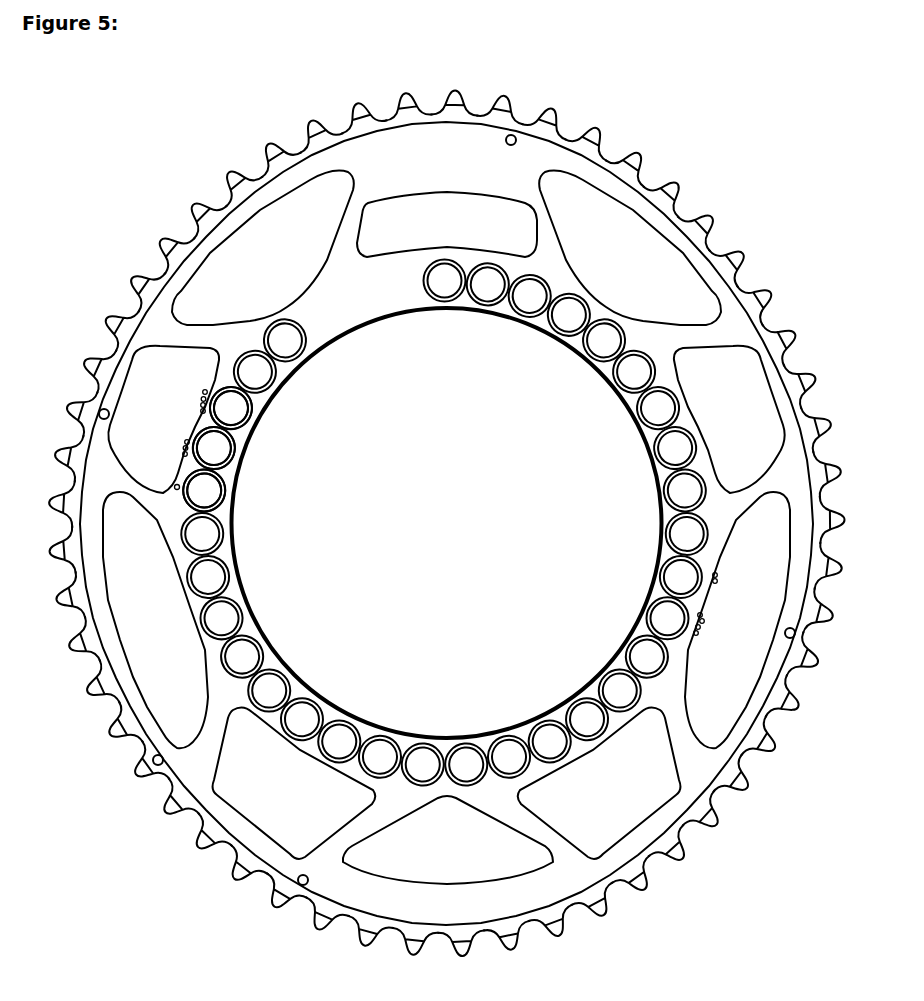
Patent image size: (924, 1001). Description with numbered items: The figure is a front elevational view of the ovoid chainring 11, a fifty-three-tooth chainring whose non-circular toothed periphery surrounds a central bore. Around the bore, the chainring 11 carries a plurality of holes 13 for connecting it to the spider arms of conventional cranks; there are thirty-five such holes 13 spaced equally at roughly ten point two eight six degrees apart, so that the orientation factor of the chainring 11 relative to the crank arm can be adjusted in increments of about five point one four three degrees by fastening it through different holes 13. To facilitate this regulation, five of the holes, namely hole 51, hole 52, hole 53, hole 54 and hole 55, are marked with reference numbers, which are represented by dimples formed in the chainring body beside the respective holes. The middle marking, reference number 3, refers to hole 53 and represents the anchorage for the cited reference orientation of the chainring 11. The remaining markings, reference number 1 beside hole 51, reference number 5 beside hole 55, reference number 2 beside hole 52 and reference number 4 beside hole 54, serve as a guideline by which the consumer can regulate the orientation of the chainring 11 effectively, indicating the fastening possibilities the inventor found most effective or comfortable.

The reference number 1 is at (173, 493).
The reference number 2 is at (720, 580).
The reference number 3 is at (180, 453).
The reference number 4 is at (707, 628).
The reference number 5 is at (202, 394).
The chainring 11 is at (362, 168).
The holes 13 is at (572, 362).
The hole 51 is at (205, 496).
The hole 52 is at (680, 575).
The hole 53 is at (215, 452).
The hole 54 is at (664, 613).
The hole 55 is at (233, 410).